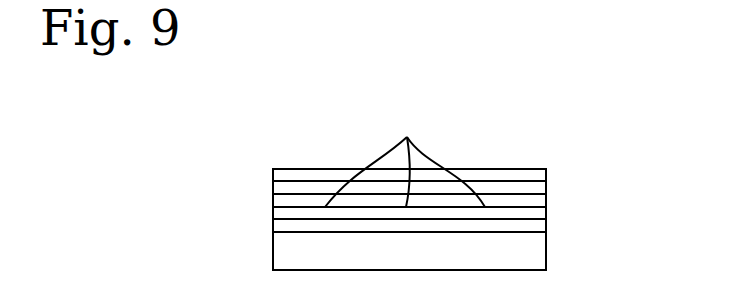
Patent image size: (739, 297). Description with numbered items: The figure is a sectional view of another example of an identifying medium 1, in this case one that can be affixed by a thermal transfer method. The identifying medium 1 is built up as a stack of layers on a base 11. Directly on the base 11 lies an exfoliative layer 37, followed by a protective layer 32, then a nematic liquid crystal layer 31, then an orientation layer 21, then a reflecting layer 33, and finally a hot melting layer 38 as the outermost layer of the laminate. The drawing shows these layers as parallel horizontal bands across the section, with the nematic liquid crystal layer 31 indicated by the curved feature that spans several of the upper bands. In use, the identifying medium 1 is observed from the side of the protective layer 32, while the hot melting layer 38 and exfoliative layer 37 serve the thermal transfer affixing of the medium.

The identifying medium 1 is at (535, 154).
The base 11 is at (535, 259).
The orientation layer 21 is at (538, 198).
The nematic liquid crystal layer 31 is at (405, 157).
The protective layer 32 is at (538, 213).
The reflecting layer 33 is at (305, 189).
The exfoliative layer 37 is at (538, 225).
The hot melting layer 38 is at (490, 176).